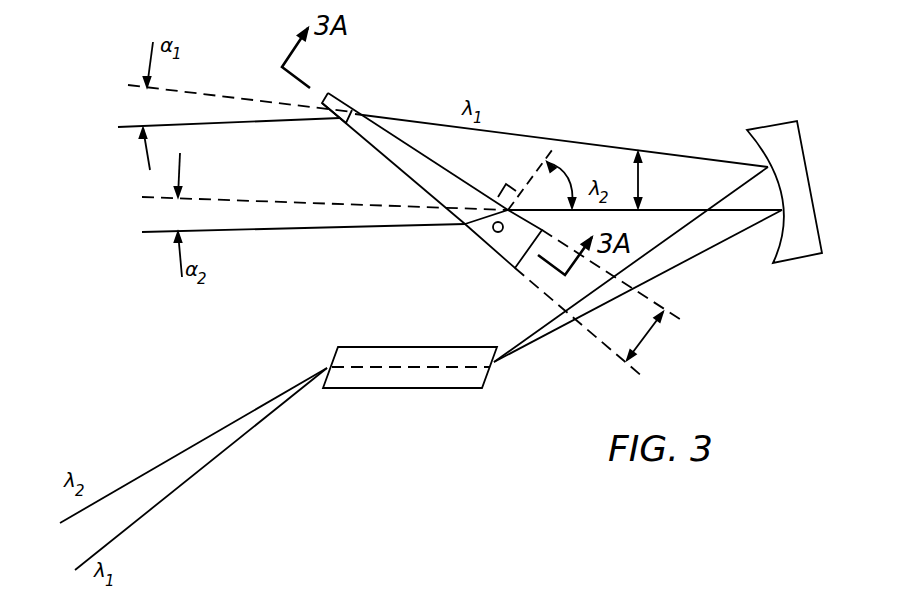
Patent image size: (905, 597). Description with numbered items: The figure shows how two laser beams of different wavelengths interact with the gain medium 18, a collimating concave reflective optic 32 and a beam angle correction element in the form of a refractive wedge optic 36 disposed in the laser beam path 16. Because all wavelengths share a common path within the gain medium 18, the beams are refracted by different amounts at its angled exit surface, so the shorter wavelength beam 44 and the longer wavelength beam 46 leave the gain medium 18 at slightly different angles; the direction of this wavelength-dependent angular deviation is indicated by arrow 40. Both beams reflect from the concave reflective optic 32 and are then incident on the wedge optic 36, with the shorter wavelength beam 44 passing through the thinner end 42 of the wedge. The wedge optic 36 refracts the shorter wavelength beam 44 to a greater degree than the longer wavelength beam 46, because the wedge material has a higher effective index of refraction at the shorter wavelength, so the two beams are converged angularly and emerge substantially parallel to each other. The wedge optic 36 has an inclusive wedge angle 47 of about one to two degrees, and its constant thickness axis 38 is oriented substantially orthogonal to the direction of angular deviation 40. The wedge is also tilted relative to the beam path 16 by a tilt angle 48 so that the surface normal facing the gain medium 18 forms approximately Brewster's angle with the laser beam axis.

The laser beam path 16 is at (410, 367).
The gain medium 18 is at (382, 388).
The concave reflective optic 32 is at (802, 147).
The second beam angle correction element 36 is at (455, 173).
The constant thickness axis 38 is at (495, 233).
The direction of angular deviation 40 is at (641, 180).
The thinner end 42 is at (322, 92).
The laser beam of shorter wavelength 44 is at (510, 133).
The laser beam of longer wavelength 46 is at (684, 262).
The inclusive wedge angle 47 is at (646, 336).
The tilt angle 48 is at (570, 180).